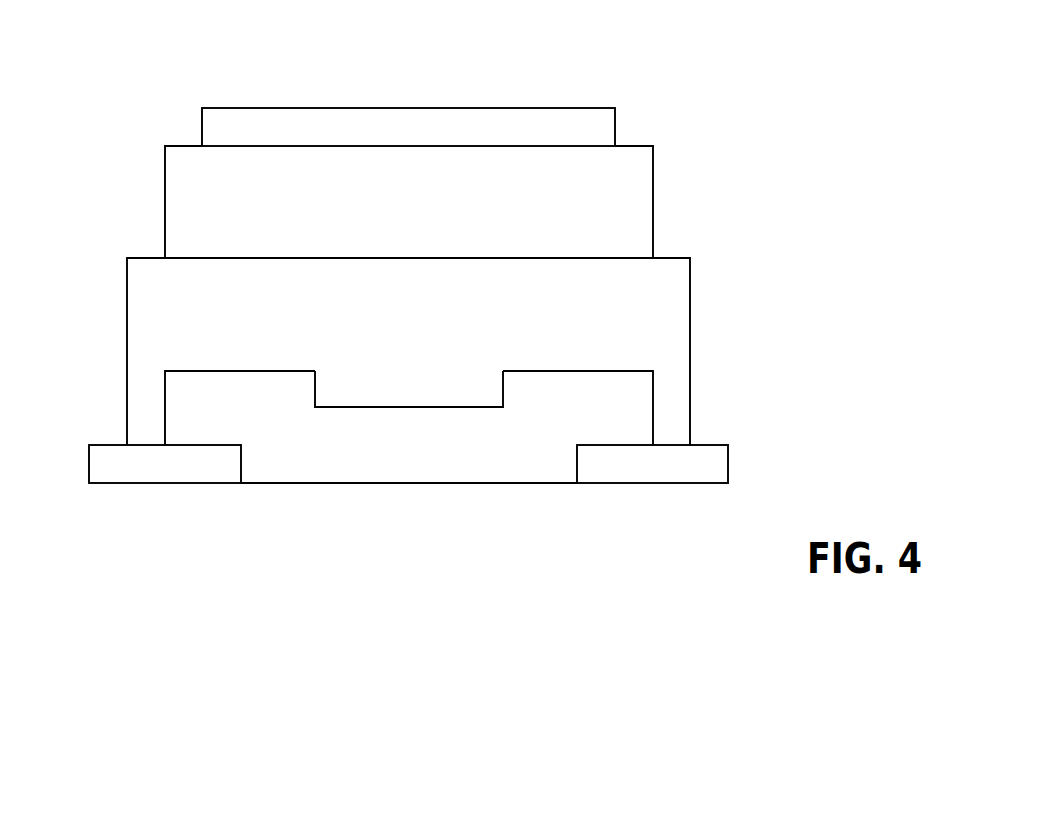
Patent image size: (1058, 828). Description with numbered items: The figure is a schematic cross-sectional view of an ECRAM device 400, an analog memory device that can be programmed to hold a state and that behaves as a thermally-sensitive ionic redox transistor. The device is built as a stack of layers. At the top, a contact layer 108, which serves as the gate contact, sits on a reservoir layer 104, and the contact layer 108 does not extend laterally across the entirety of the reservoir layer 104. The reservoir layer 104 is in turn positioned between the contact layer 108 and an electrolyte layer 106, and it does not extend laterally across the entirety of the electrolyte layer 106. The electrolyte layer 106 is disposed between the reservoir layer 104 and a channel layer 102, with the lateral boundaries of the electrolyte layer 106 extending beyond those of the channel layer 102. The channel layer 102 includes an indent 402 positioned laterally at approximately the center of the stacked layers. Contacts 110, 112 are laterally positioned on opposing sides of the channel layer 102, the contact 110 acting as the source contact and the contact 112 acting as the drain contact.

The ECRAM device 400 is at (710, 69).
The contact layer 108 is at (587, 139).
The reservoir layer 104 is at (624, 246).
The electrolyte layer 106 is at (670, 325).
The channel layer 102 is at (409, 413).
The indent 402 is at (429, 390).
The contact 110 is at (108, 445).
The contact 112 is at (709, 445).